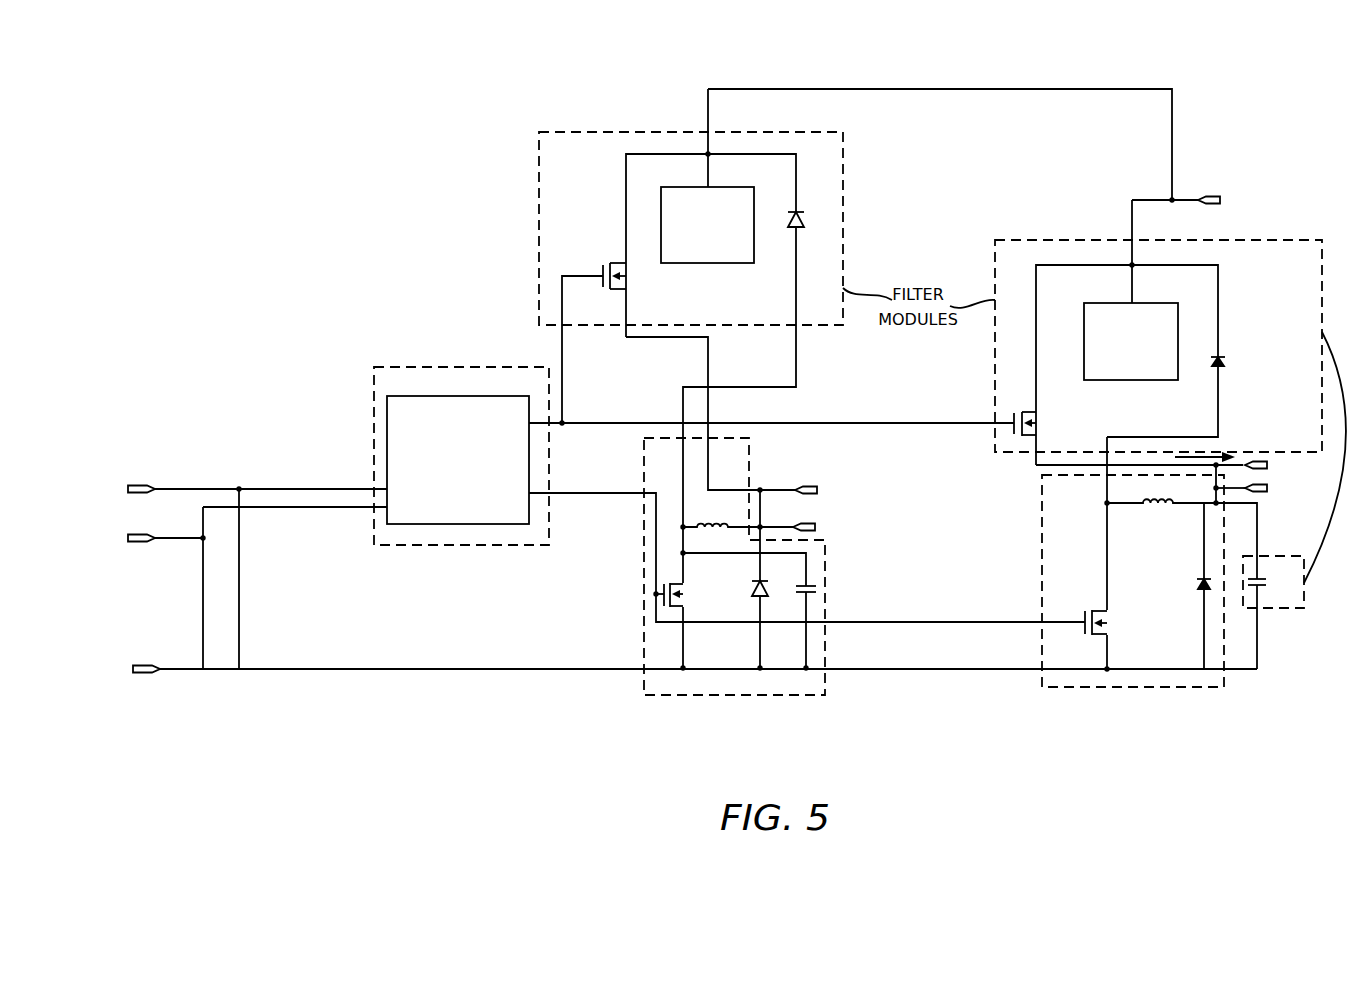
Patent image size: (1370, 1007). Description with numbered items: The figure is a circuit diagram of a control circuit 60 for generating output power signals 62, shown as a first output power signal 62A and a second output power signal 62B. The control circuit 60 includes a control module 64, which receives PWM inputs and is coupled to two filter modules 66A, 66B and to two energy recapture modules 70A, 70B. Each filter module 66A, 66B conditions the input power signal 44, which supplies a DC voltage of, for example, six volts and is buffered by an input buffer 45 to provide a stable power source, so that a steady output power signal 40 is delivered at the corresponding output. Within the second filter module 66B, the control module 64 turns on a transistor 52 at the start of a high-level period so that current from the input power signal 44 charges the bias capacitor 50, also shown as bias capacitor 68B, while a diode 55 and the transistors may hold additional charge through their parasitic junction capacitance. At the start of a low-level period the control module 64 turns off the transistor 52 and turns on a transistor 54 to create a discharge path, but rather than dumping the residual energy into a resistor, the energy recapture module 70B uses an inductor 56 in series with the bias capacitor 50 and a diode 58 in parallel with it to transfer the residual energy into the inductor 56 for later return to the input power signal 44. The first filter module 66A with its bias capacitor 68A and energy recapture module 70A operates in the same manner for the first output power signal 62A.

The control circuit 60 is at (255, 102).
The input power signal 44 is at (1183, 187).
The input buffer 45 is at (697, 232).
The control module 64 is at (417, 366).
The filter module 66A is at (742, 315).
The filter module 66B is at (1283, 265).
The output power signal 62A is at (806, 490).
The output power signal 62B is at (1275, 466).
The output power signals 62 is at (825, 572).
The energy recapture module 70A is at (825, 690).
The energy recapture module 70B is at (1052, 505).
The bias capacitor 68A is at (815, 595).
The bias capacitor 68B is at (1265, 593).
The bias capacitor 50 is at (1275, 610).
The transistor 52 is at (1038, 424).
The transistor 54 is at (1107, 572).
The diode 55 is at (1229, 397).
The inductor 56 is at (1161, 513).
The diode 58 is at (1192, 585).
The output power signal 40 is at (1206, 455).